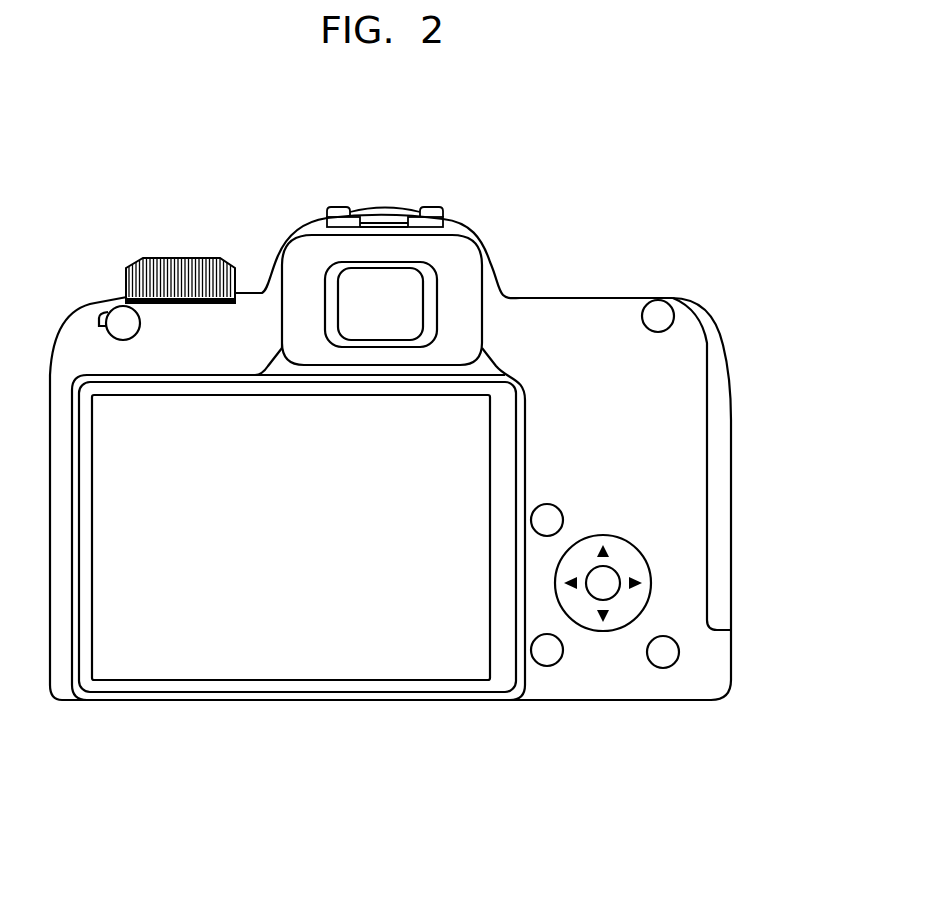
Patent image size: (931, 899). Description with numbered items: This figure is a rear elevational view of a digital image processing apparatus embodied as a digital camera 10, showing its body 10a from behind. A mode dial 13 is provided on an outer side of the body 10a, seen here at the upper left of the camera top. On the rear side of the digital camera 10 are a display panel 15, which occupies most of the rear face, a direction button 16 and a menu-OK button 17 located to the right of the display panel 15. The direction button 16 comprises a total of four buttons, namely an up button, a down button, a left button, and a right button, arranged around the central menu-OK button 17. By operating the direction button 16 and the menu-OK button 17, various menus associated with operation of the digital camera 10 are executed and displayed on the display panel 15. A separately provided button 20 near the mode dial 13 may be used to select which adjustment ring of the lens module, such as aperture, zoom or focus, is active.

The digital camera 10 is at (608, 270).
The body 10a is at (723, 550).
The mode dial 13 is at (183, 262).
The display panel 15 is at (321, 662).
The direction button 16 is at (608, 642).
The menu-OK button 17 is at (603, 590).
The button 20 is at (117, 315).